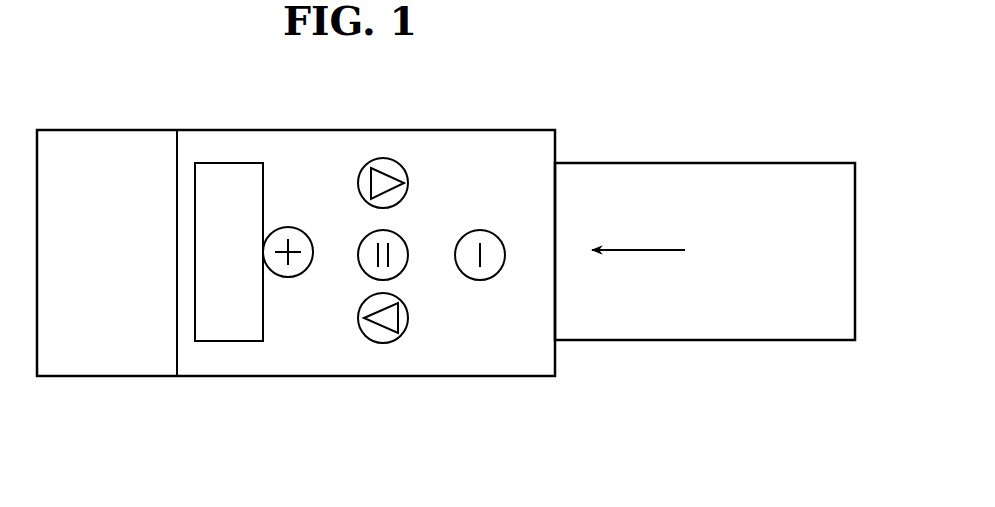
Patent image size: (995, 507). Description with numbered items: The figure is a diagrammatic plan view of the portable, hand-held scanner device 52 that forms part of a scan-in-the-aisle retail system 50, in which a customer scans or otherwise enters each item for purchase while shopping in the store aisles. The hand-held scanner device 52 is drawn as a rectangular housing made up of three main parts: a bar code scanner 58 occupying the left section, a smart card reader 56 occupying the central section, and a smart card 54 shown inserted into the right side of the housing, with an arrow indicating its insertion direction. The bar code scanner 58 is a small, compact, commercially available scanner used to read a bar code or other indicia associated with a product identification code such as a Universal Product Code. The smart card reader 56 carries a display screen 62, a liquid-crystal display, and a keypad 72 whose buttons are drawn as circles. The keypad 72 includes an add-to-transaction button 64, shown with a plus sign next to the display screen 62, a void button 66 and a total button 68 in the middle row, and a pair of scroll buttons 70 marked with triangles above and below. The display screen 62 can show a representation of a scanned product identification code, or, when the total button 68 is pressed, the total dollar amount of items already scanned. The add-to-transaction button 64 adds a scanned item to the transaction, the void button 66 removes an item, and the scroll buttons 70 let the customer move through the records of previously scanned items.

The retail system 50 is at (790, 41).
The hand-held scanner device 52 is at (691, 150).
The smart card 54 is at (733, 304).
The smart card reader 56 is at (297, 348).
The bar code scanner 58 is at (106, 352).
The display screen 62 is at (224, 170).
The add-to-transaction button 64 is at (288, 227).
The void button 66 is at (483, 229).
The total button 68 is at (400, 231).
The scroll buttons 70 is at (383, 158).
The keypad 72 is at (500, 156).